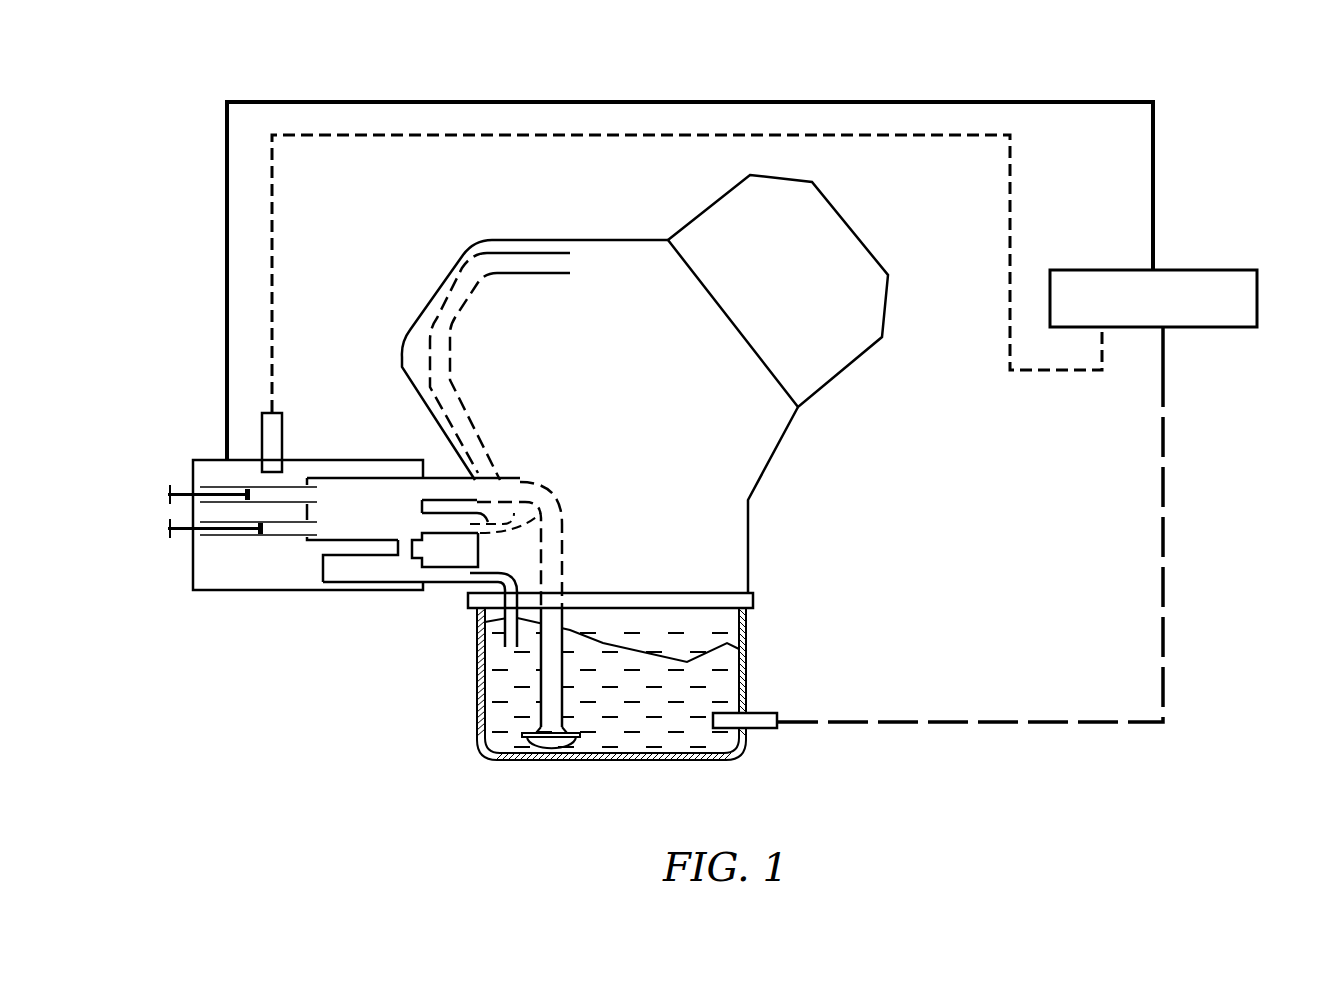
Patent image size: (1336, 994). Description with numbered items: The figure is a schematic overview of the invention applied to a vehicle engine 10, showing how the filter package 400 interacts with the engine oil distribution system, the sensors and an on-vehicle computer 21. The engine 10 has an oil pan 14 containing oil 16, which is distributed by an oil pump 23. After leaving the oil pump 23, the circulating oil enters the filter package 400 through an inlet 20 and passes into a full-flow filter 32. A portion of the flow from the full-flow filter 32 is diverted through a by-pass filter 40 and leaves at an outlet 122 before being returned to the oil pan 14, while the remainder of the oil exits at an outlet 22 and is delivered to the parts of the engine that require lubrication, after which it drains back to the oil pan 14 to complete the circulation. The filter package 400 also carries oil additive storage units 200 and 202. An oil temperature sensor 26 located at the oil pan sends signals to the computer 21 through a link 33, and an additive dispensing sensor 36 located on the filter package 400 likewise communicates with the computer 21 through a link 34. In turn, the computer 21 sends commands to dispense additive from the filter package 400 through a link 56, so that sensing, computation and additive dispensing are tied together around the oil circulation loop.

The engine 10 is at (866, 229).
The oil pan 14 is at (746, 678).
The oil 16 is at (677, 722).
The inlet 20 is at (447, 492).
The computer 21 is at (1195, 268).
The outlet 22 is at (463, 524).
The oil pump 23 is at (545, 742).
The oil temperature sensor 26 is at (755, 722).
The full-flow filter 32 is at (366, 478).
The link 33 is at (1163, 570).
The link 34 is at (1010, 222).
The additive dispensing sensor 36 is at (272, 428).
The by-pass filter 40 is at (353, 580).
The link 56 is at (905, 102).
The outlet 122 is at (490, 568).
The oil additive storage unit 200 is at (275, 530).
The oil additive storage unit 202 is at (247, 494).
The filter package 400 is at (257, 614).